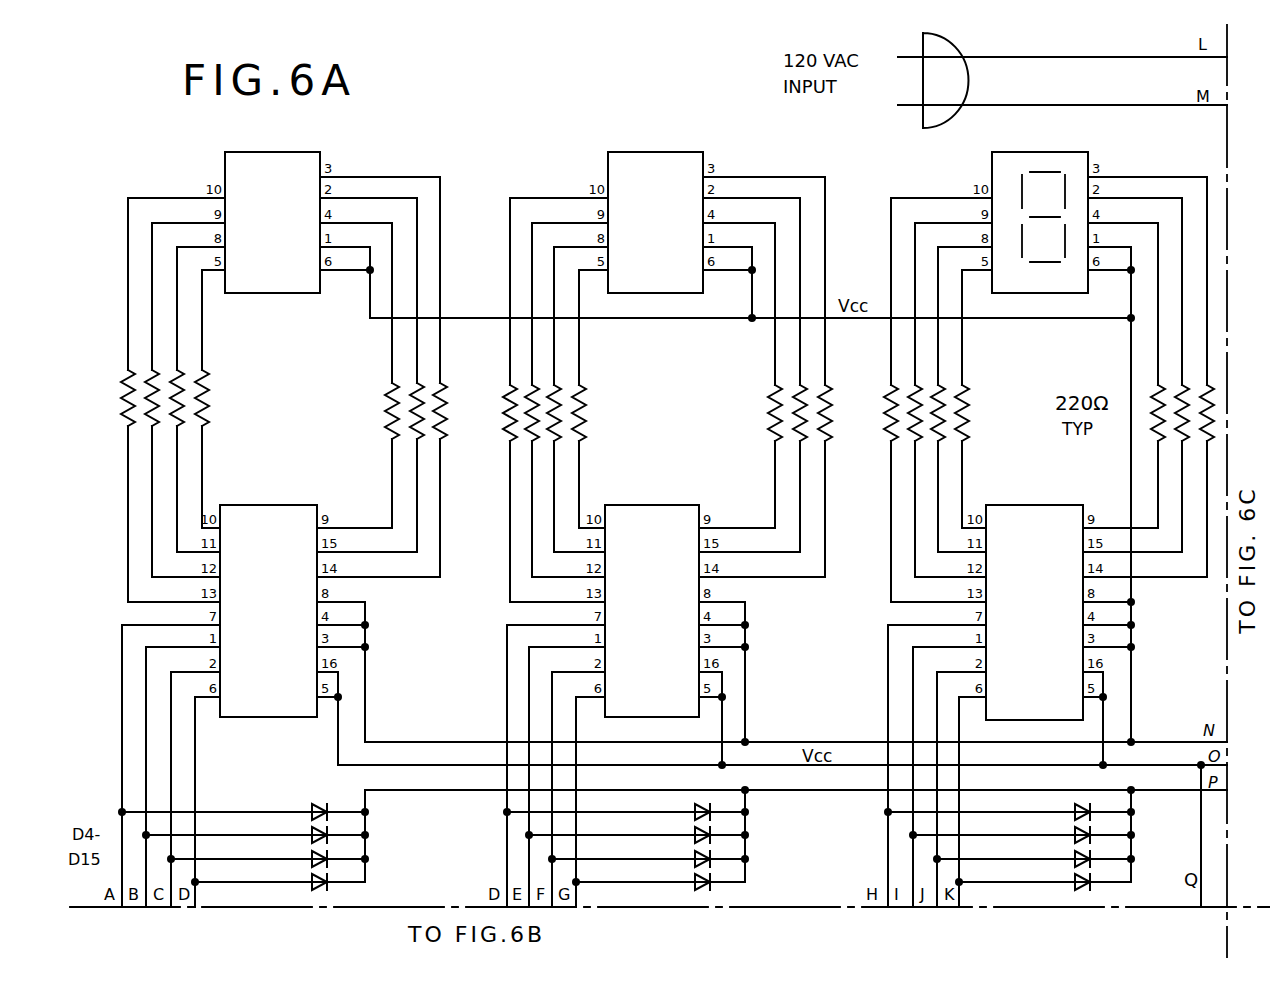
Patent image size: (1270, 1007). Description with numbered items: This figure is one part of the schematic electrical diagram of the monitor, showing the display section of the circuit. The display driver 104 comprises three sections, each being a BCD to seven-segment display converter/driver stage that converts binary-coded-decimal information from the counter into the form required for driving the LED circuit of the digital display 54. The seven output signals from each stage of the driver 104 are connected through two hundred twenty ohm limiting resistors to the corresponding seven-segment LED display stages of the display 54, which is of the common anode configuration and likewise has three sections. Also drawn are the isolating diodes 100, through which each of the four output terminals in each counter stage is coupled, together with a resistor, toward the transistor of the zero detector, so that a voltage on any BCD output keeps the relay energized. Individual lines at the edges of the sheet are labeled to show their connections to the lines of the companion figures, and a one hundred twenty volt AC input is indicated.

The display 54 is at (574, 234).
The display driver 104 is at (572, 590).
The isolating diode 100 is at (735, 884).